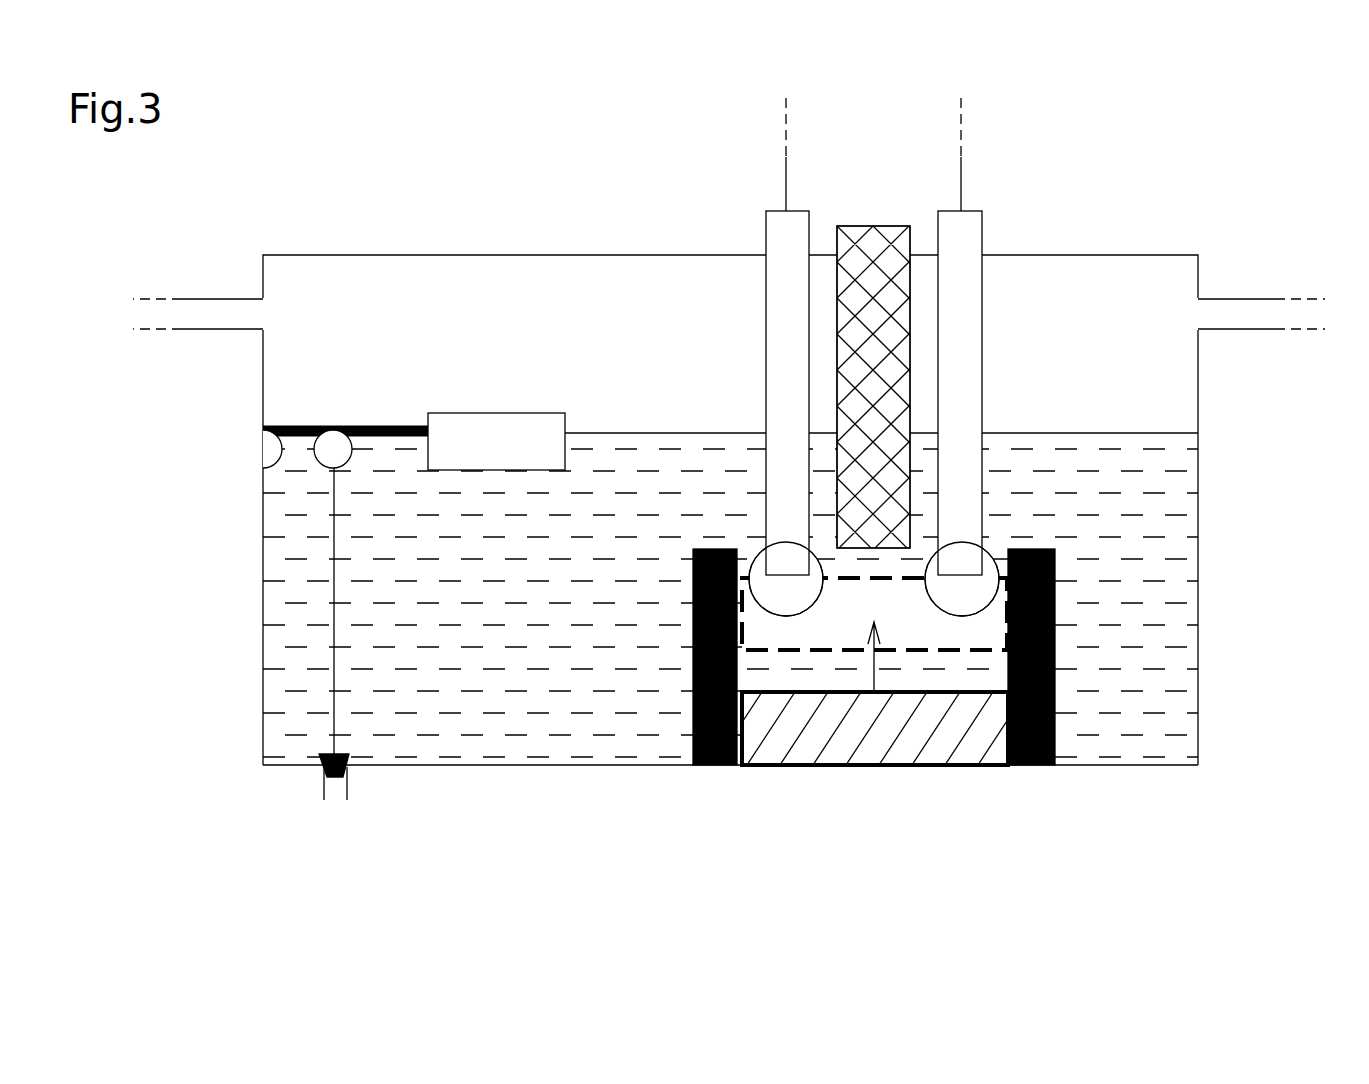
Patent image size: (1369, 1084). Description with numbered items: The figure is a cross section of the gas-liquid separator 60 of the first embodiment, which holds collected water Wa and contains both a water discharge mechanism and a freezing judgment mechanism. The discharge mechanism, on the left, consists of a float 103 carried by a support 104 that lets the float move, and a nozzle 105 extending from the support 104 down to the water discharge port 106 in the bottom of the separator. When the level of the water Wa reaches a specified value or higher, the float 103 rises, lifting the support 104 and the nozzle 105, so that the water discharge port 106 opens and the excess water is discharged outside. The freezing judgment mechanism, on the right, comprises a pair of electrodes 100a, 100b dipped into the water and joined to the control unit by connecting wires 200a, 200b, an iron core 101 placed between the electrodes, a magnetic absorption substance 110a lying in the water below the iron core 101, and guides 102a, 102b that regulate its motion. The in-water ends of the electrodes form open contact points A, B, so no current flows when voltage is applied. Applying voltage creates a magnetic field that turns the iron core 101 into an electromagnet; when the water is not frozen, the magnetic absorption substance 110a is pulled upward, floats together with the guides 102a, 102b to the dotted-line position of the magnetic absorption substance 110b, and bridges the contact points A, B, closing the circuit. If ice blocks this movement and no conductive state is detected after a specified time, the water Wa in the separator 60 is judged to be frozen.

The gas-liquid separator 60 is at (326, 247).
The iron core 101 is at (873, 226).
The electrode 100a is at (982, 227).
The electrode 100b is at (766, 227).
The connecting wire 200a is at (962, 130).
The connecting wire 200b is at (786, 130).
The guide 102a is at (710, 767).
The guide 102b is at (1023, 767).
The float 103 is at (525, 412).
The support 104 is at (334, 425).
The nozzle 105 is at (333, 685).
The water discharge port 106 is at (323, 788).
The magnetic absorption substance 110a is at (962, 737).
The magnetic absorption substance (raised position) 110b is at (793, 627).
The contact point A is at (985, 553).
The contact point B is at (752, 575).
The water Wa is at (1122, 552).